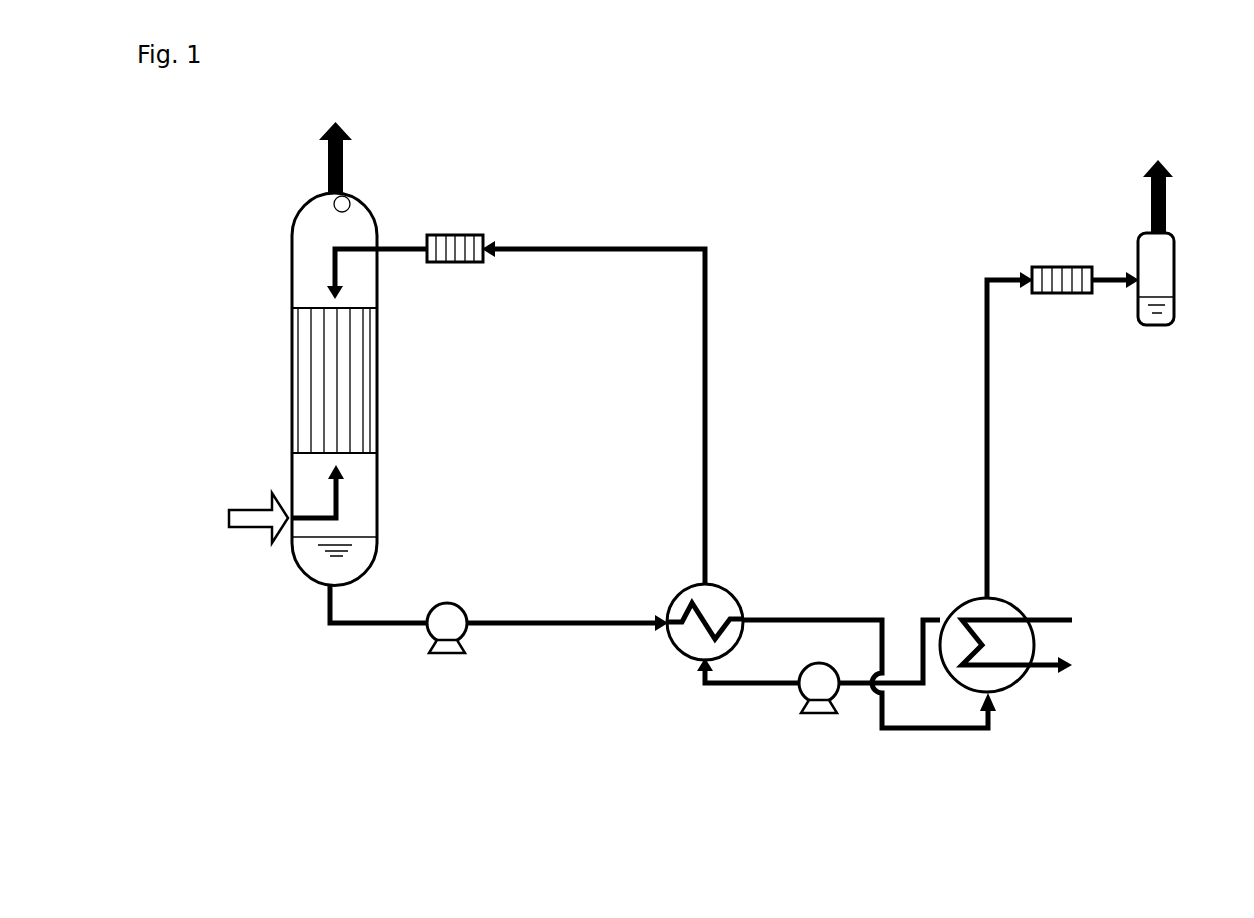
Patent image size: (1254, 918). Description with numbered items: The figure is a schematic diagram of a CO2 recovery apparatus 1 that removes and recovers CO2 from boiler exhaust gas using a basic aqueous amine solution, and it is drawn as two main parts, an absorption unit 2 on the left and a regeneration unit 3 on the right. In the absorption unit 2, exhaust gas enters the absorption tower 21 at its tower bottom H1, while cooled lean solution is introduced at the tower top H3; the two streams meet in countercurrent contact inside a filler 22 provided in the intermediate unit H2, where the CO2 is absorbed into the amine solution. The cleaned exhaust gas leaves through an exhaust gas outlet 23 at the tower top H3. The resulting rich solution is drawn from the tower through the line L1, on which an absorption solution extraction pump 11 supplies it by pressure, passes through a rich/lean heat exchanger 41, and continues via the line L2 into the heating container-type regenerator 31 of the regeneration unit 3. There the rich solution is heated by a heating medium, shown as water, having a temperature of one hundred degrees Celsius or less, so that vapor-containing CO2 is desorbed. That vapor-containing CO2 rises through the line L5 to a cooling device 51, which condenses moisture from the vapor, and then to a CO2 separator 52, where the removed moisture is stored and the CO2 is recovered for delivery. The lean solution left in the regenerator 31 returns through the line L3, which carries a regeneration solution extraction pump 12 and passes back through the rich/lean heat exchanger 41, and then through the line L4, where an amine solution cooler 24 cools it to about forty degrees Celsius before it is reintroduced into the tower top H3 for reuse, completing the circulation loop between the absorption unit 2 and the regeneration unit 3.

The CO2 recovery apparatus 1 is at (196, 243).
The absorption unit 2 is at (550, 752).
The regeneration unit 3 is at (1195, 758).
The absorption solution extraction pump 11 is at (450, 656).
The regeneration solution extraction pump 12 is at (821, 717).
The absorption tower 21 is at (291, 336).
The filler 22 is at (360, 400).
The exhaust gas outlet 23 is at (348, 196).
The amine solution cooler 24 is at (450, 265).
The heating container-type regenerator 31 is at (1004, 600).
The rich/lean heat exchanger 41 is at (680, 588).
The cooling device 51 is at (1066, 263).
The CO2 separator 52 is at (1177, 260).
The tower bottom H1 is at (378, 518).
The intermediate unit H2 is at (378, 370).
The tower top H3 is at (291, 262).
The line L1 is at (503, 627).
The line L2 is at (856, 614).
The line L3 is at (728, 690).
The line L4 is at (527, 255).
The line L5 is at (990, 437).